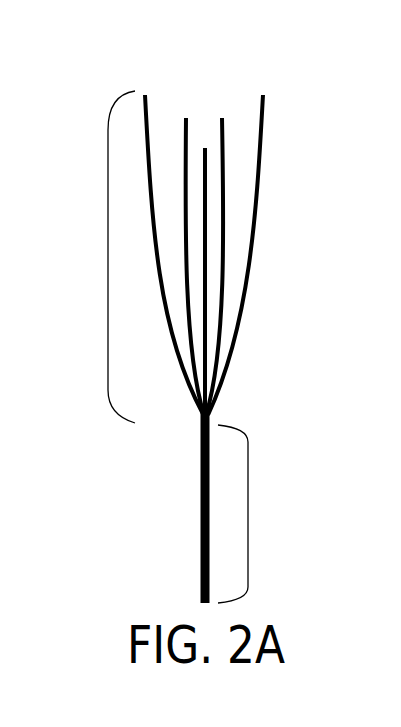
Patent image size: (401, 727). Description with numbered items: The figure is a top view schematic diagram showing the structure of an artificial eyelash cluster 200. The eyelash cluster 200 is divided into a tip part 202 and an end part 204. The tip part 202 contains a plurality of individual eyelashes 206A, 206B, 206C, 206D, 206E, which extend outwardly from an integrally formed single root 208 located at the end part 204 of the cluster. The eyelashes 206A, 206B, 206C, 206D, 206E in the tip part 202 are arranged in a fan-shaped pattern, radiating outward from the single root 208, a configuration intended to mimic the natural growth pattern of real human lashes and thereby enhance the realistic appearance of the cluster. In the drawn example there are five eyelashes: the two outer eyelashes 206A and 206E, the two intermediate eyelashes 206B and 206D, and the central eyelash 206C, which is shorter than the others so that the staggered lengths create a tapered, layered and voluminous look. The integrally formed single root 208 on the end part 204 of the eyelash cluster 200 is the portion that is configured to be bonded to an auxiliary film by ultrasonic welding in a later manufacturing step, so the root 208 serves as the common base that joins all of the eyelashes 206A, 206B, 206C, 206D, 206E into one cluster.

The eyelash cluster 200 is at (195, 68).
The tip part 202 is at (108, 258).
The end part 204 is at (248, 514).
The individual eyelash 206A is at (262, 130).
The individual eyelash 206B is at (226, 180).
The central eyelash 206C is at (205, 215).
The individual eyelash 206D is at (185, 263).
The individual eyelash 206E is at (160, 302).
The integrally formed single root 208 is at (200, 510).